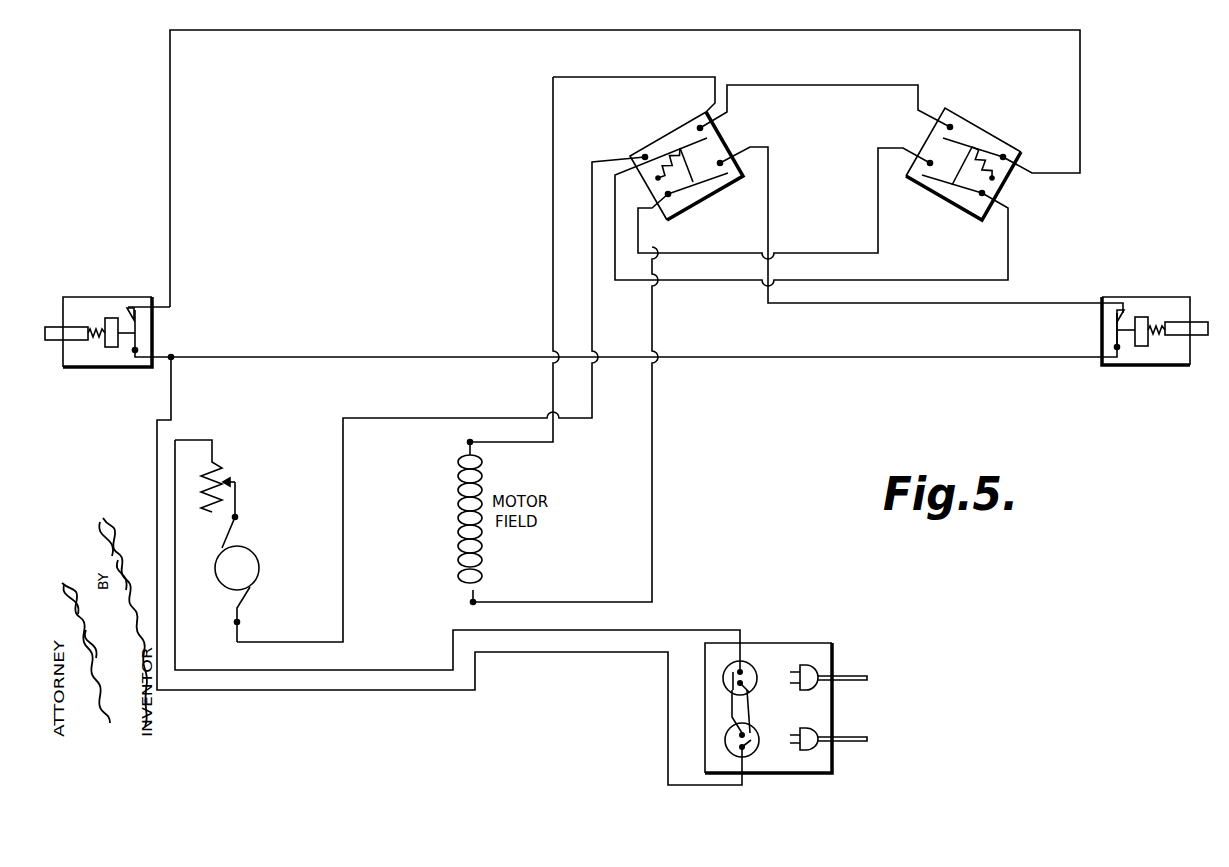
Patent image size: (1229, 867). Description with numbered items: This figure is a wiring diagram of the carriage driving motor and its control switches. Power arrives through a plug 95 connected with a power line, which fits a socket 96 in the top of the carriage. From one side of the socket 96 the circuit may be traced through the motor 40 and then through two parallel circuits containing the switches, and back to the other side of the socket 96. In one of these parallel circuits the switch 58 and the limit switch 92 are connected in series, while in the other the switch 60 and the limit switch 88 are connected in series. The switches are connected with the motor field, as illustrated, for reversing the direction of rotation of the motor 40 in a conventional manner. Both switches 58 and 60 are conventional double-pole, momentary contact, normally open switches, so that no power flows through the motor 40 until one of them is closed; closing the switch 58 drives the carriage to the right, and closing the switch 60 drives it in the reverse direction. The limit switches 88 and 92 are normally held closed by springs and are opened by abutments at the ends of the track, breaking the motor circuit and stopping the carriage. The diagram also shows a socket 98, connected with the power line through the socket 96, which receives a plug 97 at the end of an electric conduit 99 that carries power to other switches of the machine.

The motor 40 is at (247, 560).
The switch 58 is at (673, 135).
The switch 60 is at (985, 137).
The limit switch 88 is at (87, 305).
The limit switch 92 is at (1157, 303).
The plug 95 is at (810, 665).
The socket 96 is at (752, 685).
The plug 97 is at (807, 732).
The socket 98 is at (752, 745).
The electric conduit 99 is at (850, 738).